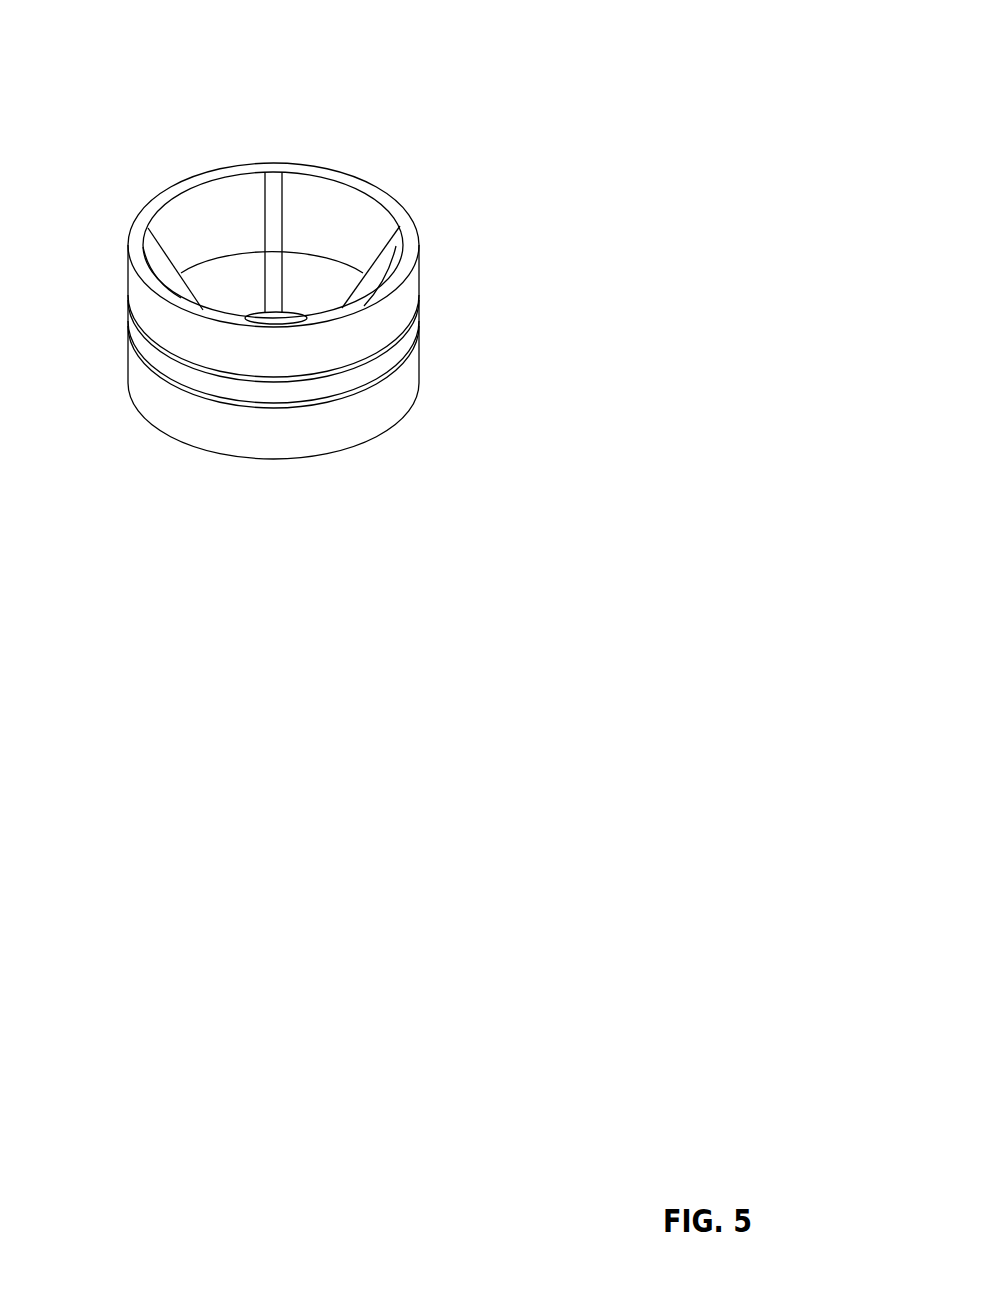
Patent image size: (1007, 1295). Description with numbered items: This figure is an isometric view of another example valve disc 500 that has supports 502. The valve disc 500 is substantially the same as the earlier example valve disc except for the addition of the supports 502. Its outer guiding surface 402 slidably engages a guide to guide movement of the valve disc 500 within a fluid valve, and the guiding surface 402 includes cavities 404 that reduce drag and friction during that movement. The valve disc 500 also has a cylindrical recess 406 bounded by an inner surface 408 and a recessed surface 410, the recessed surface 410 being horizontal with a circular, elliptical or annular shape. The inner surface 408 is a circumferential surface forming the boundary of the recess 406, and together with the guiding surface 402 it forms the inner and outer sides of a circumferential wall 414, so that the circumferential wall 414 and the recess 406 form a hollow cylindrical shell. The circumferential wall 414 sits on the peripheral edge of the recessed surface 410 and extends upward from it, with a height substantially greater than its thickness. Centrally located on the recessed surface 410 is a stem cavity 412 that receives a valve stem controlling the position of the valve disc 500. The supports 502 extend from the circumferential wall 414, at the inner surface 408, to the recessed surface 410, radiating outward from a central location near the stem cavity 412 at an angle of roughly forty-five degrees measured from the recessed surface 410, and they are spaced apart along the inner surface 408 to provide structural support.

The valve disc 500 is at (557, 88).
The guiding surface 402 is at (207, 357).
The cavities 404 is at (419, 317).
The recess 406 is at (322, 186).
The inner surface 408 is at (222, 192).
The recessed surface 410 is at (320, 280).
The stem cavity 412 is at (277, 318).
The circumferential wall 414 is at (150, 226).
The supports 502 is at (277, 172).